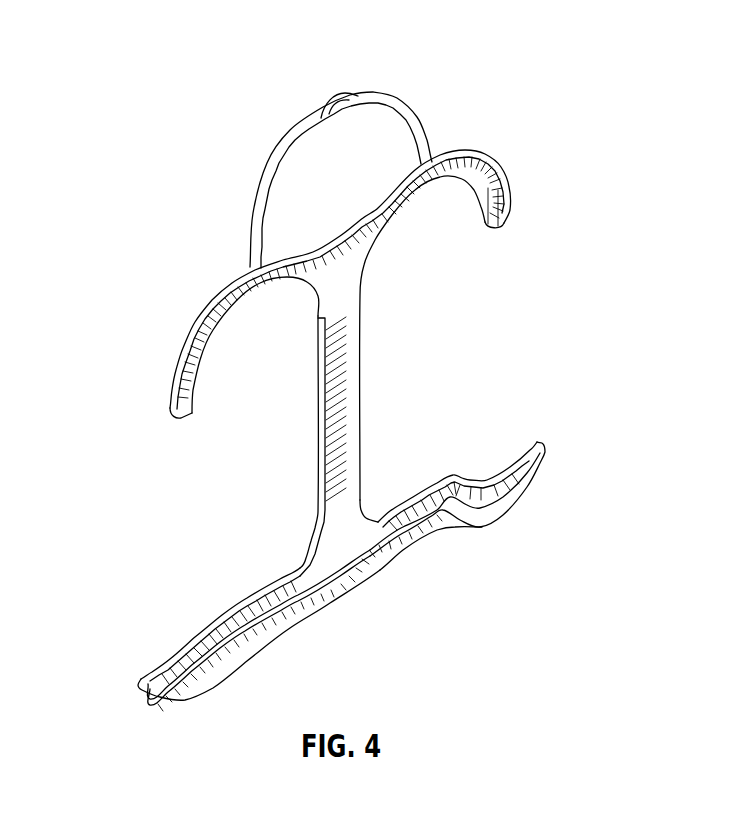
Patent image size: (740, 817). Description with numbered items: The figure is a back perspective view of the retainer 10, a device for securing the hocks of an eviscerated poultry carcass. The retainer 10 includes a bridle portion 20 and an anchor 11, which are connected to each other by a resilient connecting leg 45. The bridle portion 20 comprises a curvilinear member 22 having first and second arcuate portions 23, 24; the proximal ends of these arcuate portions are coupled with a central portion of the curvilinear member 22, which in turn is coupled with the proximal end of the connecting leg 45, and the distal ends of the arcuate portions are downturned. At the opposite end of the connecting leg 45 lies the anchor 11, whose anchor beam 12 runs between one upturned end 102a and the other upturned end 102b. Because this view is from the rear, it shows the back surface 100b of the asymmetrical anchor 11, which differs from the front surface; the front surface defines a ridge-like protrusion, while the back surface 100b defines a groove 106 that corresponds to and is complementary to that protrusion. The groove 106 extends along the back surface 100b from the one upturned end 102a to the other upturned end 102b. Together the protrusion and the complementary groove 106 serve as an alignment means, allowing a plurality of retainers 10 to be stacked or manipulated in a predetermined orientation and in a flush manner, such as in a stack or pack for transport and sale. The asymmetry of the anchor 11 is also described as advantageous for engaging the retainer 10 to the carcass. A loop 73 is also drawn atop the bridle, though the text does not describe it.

The retainer 10 is at (207, 146).
The anchor 11 is at (210, 591).
The anchor beam 12 is at (420, 559).
The bridle portion 20 is at (487, 35).
The curvilinear member 22 is at (510, 200).
The first arcuate portion 23 is at (204, 312).
The second arcuate portion 24 is at (477, 154).
The resilient connecting leg 45 is at (361, 364).
The top loop 73 is at (403, 105).
The back surface 100b is at (343, 597).
The upturned end 102a is at (540, 437).
The upturned end 102b is at (131, 679).
The groove 106 is at (273, 606).